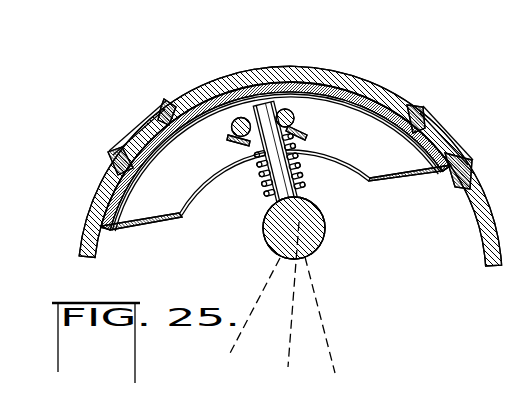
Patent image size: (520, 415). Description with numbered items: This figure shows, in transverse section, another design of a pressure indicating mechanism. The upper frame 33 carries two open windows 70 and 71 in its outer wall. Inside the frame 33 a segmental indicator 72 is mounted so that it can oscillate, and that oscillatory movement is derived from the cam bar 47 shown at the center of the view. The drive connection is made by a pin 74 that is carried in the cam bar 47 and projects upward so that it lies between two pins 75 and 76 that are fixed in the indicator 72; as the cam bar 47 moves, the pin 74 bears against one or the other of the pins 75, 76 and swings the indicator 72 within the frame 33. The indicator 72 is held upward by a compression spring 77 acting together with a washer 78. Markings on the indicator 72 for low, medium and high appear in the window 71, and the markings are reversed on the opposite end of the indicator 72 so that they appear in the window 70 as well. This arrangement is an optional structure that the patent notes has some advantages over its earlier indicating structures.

The upper frame 33 is at (356, 77).
The window 71 is at (150, 118).
The window 70 is at (443, 126).
The segmental indicator 72 is at (423, 173).
The pin 74 is at (262, 187).
The compression spring 77 is at (298, 172).
The pin 75 is at (232, 125).
The pin 76 is at (295, 118).
The washer 78 is at (303, 132).
The cam bar 47 is at (325, 228).